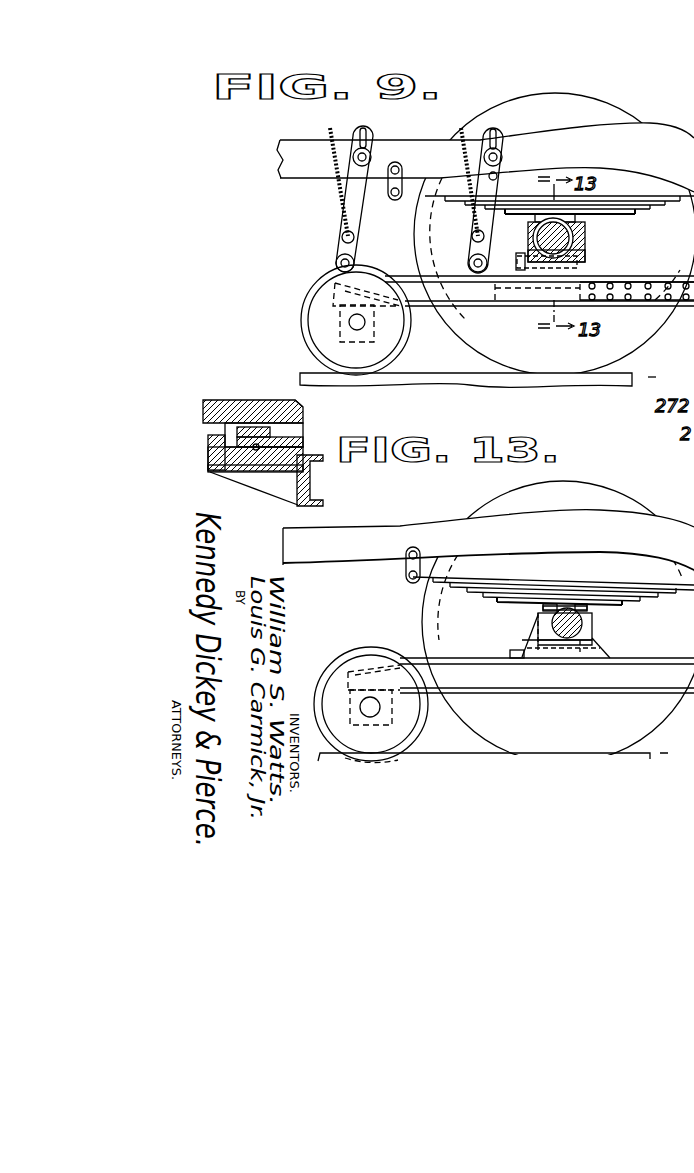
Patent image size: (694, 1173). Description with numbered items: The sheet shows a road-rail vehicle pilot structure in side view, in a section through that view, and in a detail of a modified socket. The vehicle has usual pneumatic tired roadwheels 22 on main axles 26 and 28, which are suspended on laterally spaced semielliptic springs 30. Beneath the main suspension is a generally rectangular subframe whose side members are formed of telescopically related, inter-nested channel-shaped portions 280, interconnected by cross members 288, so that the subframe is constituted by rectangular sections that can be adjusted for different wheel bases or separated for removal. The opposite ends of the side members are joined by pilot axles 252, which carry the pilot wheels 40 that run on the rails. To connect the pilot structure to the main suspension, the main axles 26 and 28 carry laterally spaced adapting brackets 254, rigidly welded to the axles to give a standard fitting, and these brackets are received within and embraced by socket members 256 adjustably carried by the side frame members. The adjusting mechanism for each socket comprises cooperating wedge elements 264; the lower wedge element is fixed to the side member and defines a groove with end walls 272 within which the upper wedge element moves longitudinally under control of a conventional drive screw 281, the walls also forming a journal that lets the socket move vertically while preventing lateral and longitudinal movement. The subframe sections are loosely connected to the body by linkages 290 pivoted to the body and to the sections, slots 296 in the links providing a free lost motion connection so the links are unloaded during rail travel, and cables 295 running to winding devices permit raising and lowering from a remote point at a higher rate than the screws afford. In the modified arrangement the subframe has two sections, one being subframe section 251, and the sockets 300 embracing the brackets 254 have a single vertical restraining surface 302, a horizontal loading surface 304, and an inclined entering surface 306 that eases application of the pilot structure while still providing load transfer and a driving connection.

In FIG. 9, the pneumatic tired roadwheels 22 is at (609, 114).
In FIG. 9, the main axle 26 is at (568, 213).
In FIG. 10, the main axle 26 is at (302, 416).
In FIG. 13, the main axle 26 is at (567, 603).
In FIG. 9, the main axle 28 is at (641, 300).
In FIG. 13, the main axle 28 is at (558, 622).
In FIG. 9, the semielliptic spring 30 is at (629, 206).
In FIG. 13, the semielliptic spring 30 is at (606, 590).
In FIG. 9, the pilot wheels 40 is at (320, 344).
In FIG. 13, the pilot wheels 40 is at (364, 661).
In FIG. 13, the subframe section 251 is at (494, 682).
In FIG. 9, the pilot axles 252 is at (340, 322).
In FIG. 9, the adapting brackets 254 is at (577, 241).
In FIG. 10, the adapting brackets 254 is at (258, 408).
In FIG. 13, the adapting brackets 254 is at (594, 621).
In FIG. 9, the socket members 256 is at (588, 253).
In FIG. 10, the socket members 256 is at (304, 433).
In FIG. 10, the wedge elements 264 is at (217, 468).
In FIG. 13, the end walls 272 is at (488, 540).
In FIG. 9, the channel-shaped portion 280 is at (497, 306).
In FIG. 10, the channel-shaped portion 280 is at (312, 485).
In FIG. 9, the drive screw 281 is at (511, 266).
In FIG. 10, the drive screw 281 is at (257, 451).
In FIG. 9, the cross members 288 is at (554, 234).
In FIG. 9, the linkage 290 is at (472, 233).
In FIG. 9, the cables 295 is at (342, 190).
In FIG. 9, the slots 296 is at (372, 140).
In FIG. 13, the sockets 300 is at (556, 640).
In FIG. 13, the vertical restraining surface 302 is at (536, 616).
In FIG. 13, the horizontal loading surface 304 is at (565, 638).
In FIG. 13, the inclined entering surface 306 is at (603, 638).